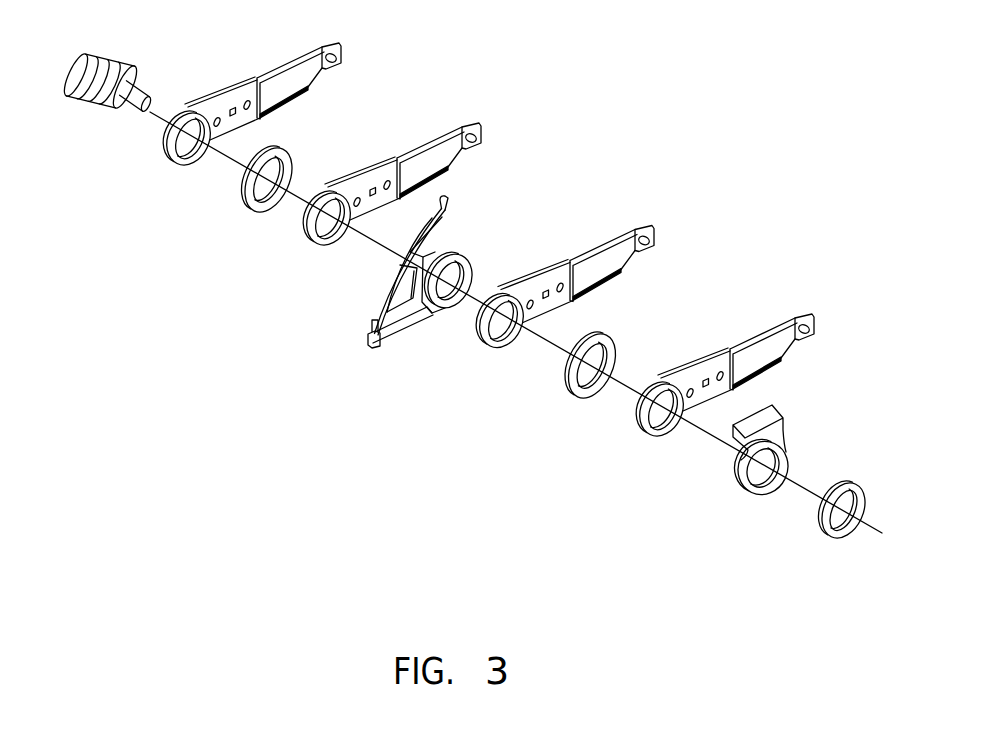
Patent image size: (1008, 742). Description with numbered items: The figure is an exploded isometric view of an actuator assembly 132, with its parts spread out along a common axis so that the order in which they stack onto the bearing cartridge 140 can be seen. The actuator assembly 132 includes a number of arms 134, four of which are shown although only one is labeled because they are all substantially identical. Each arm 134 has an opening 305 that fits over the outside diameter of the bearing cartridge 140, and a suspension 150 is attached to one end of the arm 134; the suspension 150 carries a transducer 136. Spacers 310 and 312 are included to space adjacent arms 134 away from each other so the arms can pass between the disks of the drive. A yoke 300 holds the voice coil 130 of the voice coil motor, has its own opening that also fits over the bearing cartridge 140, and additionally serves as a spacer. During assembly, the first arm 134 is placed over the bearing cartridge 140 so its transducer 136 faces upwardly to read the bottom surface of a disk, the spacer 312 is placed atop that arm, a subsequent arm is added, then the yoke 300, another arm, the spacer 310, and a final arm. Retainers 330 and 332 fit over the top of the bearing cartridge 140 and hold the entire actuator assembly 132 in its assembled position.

The voice coil 130 is at (396, 305).
The actuator assembly 132 is at (222, 292).
The arm 134 is at (286, 128).
The transducer 136 is at (345, 54).
The bearing cartridge 140 is at (88, 102).
The suspension 150 is at (287, 72).
The yoke 300 is at (437, 308).
The opening 305 is at (188, 165).
The spacer 310 is at (585, 398).
The spacer 312 is at (290, 155).
The retainer 330 is at (765, 492).
The retainer 332 is at (843, 543).